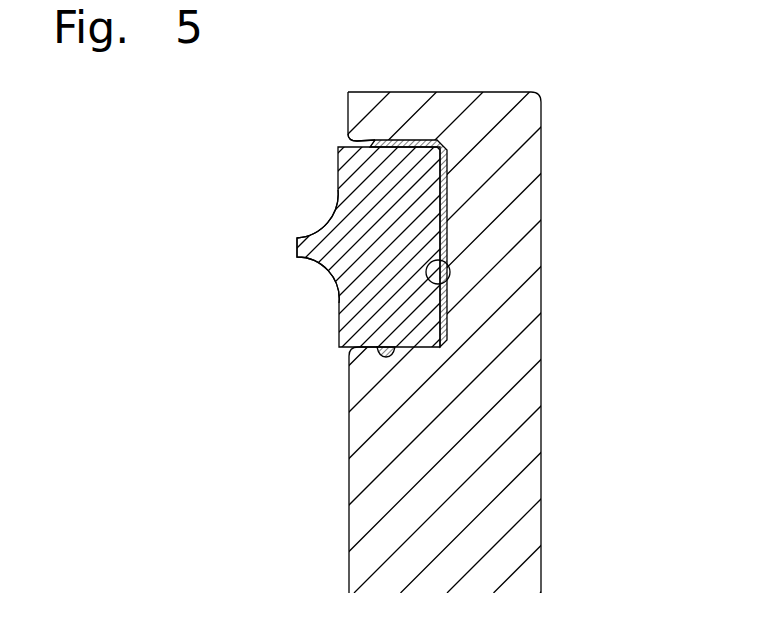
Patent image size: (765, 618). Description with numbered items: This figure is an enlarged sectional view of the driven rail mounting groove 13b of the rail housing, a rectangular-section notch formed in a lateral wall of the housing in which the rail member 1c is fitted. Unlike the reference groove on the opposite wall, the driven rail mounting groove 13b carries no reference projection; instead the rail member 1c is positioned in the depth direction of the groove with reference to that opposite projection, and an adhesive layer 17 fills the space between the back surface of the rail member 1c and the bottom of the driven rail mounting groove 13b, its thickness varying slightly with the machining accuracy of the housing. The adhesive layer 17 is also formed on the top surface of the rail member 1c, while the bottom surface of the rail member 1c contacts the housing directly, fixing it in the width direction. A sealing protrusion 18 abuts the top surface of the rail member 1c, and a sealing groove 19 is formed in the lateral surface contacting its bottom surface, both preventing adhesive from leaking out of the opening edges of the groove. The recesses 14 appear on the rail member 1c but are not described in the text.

The rail member 1c is at (337, 157).
The driven rail mounting groove 13b is at (447, 288).
The engagement recess 14 is at (320, 227).
The adhesive layer 17 is at (398, 140).
The sealing protrusion 18 is at (360, 143).
The sealing groove 19 is at (386, 350).